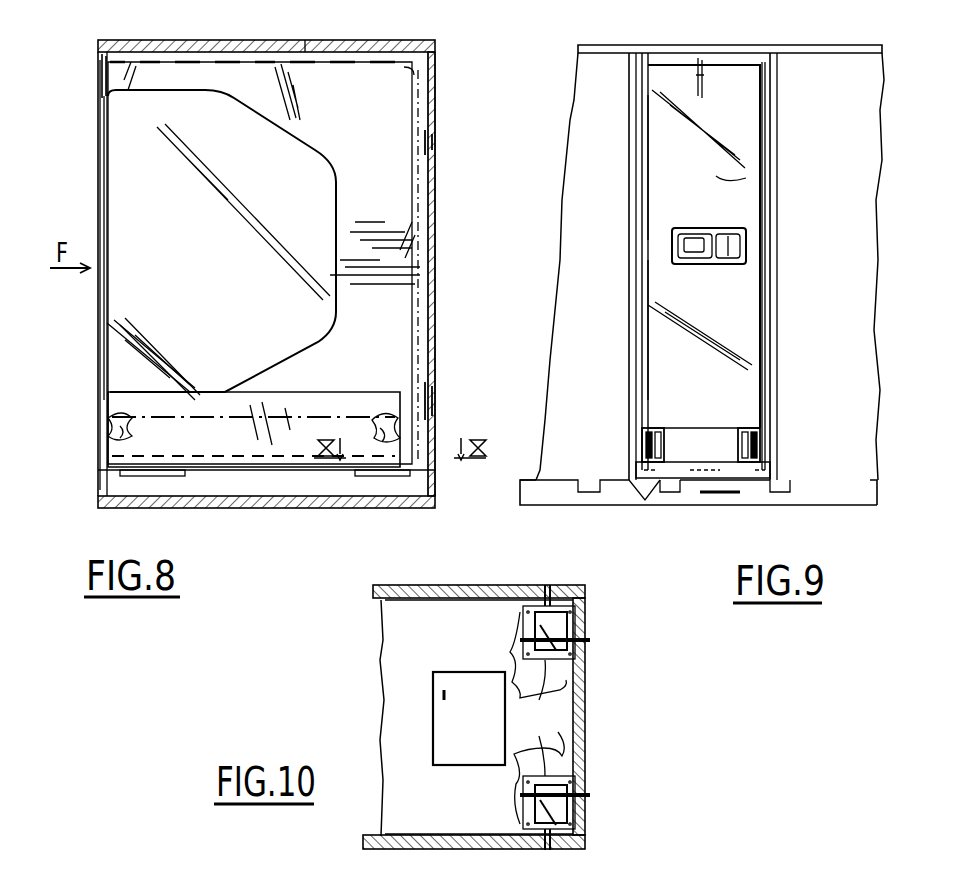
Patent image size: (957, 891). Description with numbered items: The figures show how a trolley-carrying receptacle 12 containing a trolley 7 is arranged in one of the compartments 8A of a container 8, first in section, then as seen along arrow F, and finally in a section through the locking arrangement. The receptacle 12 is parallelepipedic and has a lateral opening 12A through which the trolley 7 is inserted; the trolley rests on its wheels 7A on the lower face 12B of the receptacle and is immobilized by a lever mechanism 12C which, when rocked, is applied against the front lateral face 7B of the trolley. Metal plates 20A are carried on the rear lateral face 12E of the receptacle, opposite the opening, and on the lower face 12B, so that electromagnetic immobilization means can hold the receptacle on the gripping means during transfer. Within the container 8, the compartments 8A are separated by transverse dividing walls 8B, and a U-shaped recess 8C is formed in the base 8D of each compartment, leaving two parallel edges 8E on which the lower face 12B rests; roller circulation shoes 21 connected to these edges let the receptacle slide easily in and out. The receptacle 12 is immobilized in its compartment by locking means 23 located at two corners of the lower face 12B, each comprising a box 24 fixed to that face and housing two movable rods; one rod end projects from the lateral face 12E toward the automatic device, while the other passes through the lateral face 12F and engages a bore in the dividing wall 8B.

In FIG. 8, the trolley 7 is at (130, 290).
In FIG. 9, the trolley 7 is at (760, 175).
In FIG. 8, the wheels 7A is at (108, 435).
In FIG. 9, the wheels 7A is at (645, 440).
In FIG. 8, the front lateral face 7B is at (106, 140).
In FIG. 8, the container 8 is at (224, 40).
In FIG. 9, the container 8 is at (590, 45).
In FIG. 8, the compartment 8A is at (304, 44).
In FIG. 9, the transverse dividing wall 8B is at (630, 206).
In FIG. 10, the transverse dividing wall 8B is at (372, 592).
In FIG. 9, the U shaped recess 8C is at (720, 492).
In FIG. 9, the base 8D is at (565, 505).
In FIG. 9, the parallel edges 8E is at (658, 490).
In FIG. 8, the receptacle 12 is at (375, 100).
In FIG. 9, the receptacle 12 is at (662, 62).
In FIG. 10, the receptacle 12 is at (602, 690).
In FIG. 8, the lateral opening 12A is at (100, 190).
In FIG. 8, the lower face 12B is at (226, 475).
In FIG. 9, the lower face 12B is at (772, 480).
In FIG. 10, the lower face 12B is at (408, 714).
In FIG. 8, the lever mechanism 12C is at (104, 82).
In FIG. 9, the lever mechanism 12C is at (720, 76).
In FIG. 8, the lateral face 12E is at (420, 278).
In FIG. 10, the lateral face 12E is at (585, 720).
In FIG. 10, the lateral face 12F is at (468, 606).
In FIG. 8, the metal plates 20A is at (160, 478).
In FIG. 9, the metal plates 20A is at (688, 470).
In FIG. 9, the roller circulation shoes 21 is at (642, 490).
In FIG. 10, the locking means 23 is at (519, 590).
In FIG. 10, the box 24 is at (542, 668).